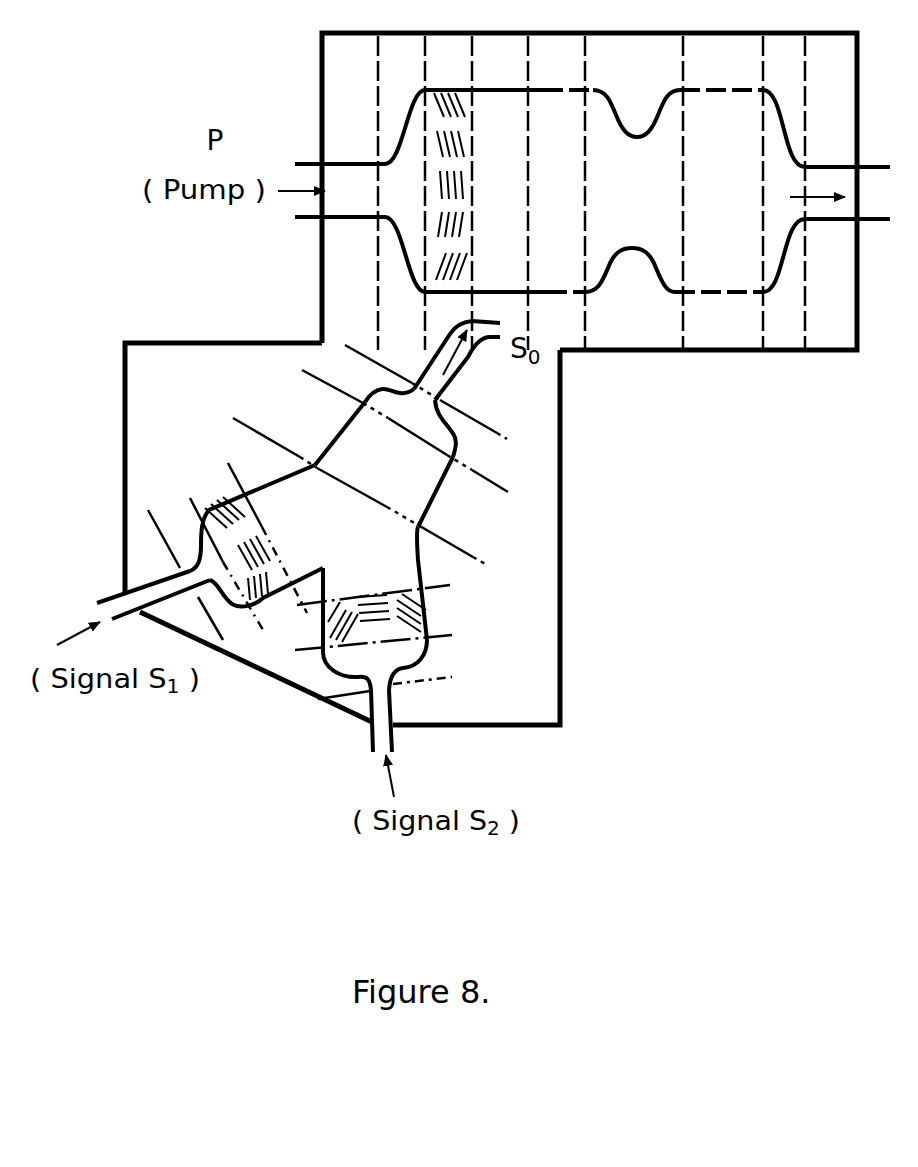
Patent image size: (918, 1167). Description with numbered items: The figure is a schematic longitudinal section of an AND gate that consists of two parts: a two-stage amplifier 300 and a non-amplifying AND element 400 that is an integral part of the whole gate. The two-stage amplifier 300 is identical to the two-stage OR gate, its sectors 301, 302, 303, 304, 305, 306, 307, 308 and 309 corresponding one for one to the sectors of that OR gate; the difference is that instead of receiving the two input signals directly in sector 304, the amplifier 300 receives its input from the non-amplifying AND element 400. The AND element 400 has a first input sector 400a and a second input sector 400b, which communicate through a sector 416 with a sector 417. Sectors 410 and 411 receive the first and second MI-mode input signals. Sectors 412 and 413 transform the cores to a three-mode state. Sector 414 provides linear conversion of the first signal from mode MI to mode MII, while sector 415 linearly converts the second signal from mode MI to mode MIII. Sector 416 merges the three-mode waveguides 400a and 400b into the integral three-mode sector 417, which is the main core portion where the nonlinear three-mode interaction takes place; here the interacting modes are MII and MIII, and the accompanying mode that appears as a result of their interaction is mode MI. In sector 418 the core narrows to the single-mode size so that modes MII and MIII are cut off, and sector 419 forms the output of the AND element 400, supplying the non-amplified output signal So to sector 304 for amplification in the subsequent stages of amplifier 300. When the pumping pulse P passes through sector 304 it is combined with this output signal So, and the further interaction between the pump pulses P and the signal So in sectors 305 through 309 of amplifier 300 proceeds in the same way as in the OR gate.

The two-stage amplifier 300 is at (828, 360).
The sector 301 is at (355, 177).
The sector 302 is at (403, 177).
The sector 303 is at (450, 177).
The sector 304 is at (501, 177).
The sector 305 is at (562, 177).
The sector 306 is at (653, 177).
The sector 307 is at (735, 177).
The sector 308 is at (783, 177).
The sector 309 is at (831, 167).
The non-amplifying AND element 400 is at (568, 543).
The first input sector 400a is at (222, 368).
The second input sector 400b is at (498, 705).
The sector 410 is at (160, 575).
The sector 411 is at (385, 714).
The sector 412 is at (231, 547).
The sector 413 is at (387, 629).
The sector 414 is at (247, 535).
The sector 415 is at (388, 613).
The sector 416 is at (360, 521).
The sector 417 is at (405, 448).
The sector 418 is at (426, 407).
The sector 419 is at (462, 360).